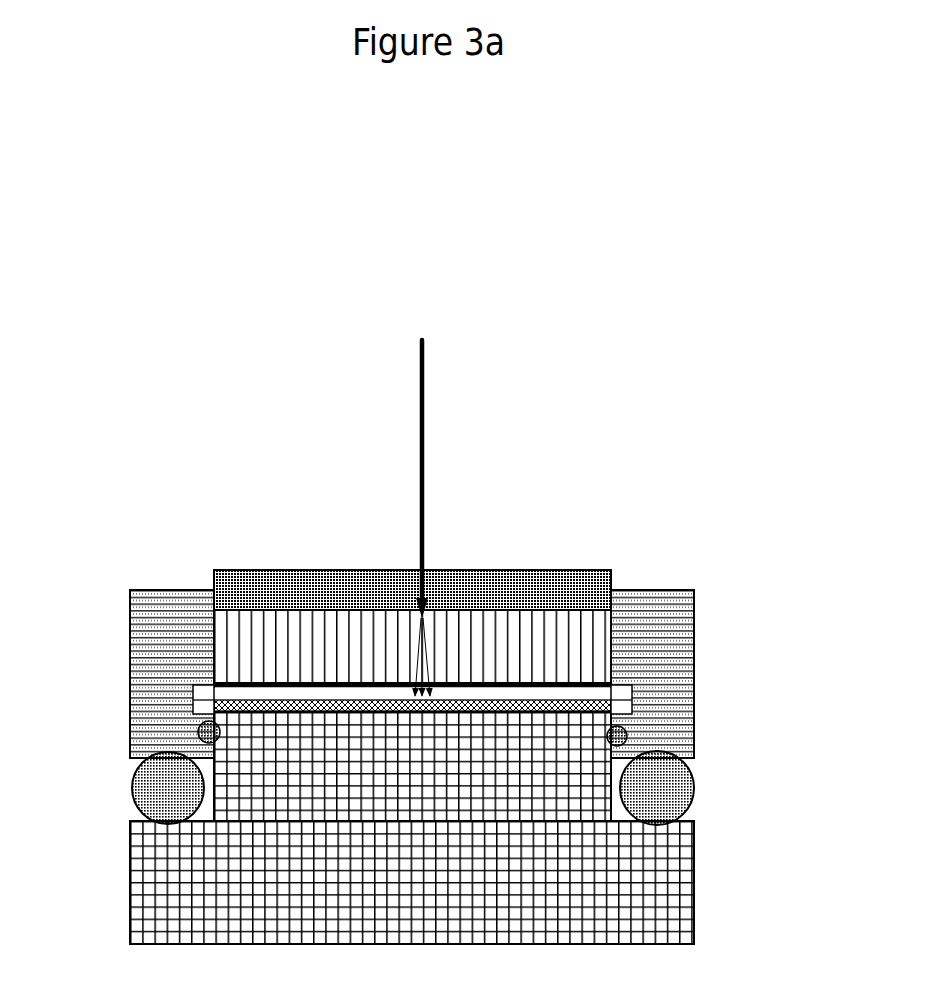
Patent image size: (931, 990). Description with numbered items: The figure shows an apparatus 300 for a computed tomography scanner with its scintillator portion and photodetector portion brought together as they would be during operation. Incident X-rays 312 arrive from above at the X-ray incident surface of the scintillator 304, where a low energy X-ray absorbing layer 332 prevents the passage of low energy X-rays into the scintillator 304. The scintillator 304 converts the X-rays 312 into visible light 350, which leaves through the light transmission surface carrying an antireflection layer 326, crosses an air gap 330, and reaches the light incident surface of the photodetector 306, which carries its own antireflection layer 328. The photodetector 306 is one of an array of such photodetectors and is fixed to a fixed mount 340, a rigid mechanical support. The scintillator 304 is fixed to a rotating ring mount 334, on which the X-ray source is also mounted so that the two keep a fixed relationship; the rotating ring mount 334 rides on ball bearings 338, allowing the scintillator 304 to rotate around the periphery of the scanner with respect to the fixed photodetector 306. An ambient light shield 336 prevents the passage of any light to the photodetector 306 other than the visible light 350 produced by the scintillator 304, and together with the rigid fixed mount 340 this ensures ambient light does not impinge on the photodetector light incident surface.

The apparatus 300 is at (123, 392).
The scintillator 304 is at (368, 647).
The photodetector 306 is at (193, 702).
The X-rays 312 is at (420, 408).
The antireflection layer 326 is at (310, 680).
The antireflection layer 328 is at (228, 696).
The air gap 330 is at (268, 690).
The low energy X-ray absorbing layer 332 is at (485, 570).
The rotating ring mount 334 is at (695, 672).
The ambient light shield 336 is at (635, 700).
The ball bearings 338 is at (640, 737).
The fixed mount 340 is at (567, 780).
The visible light 350 is at (428, 663).